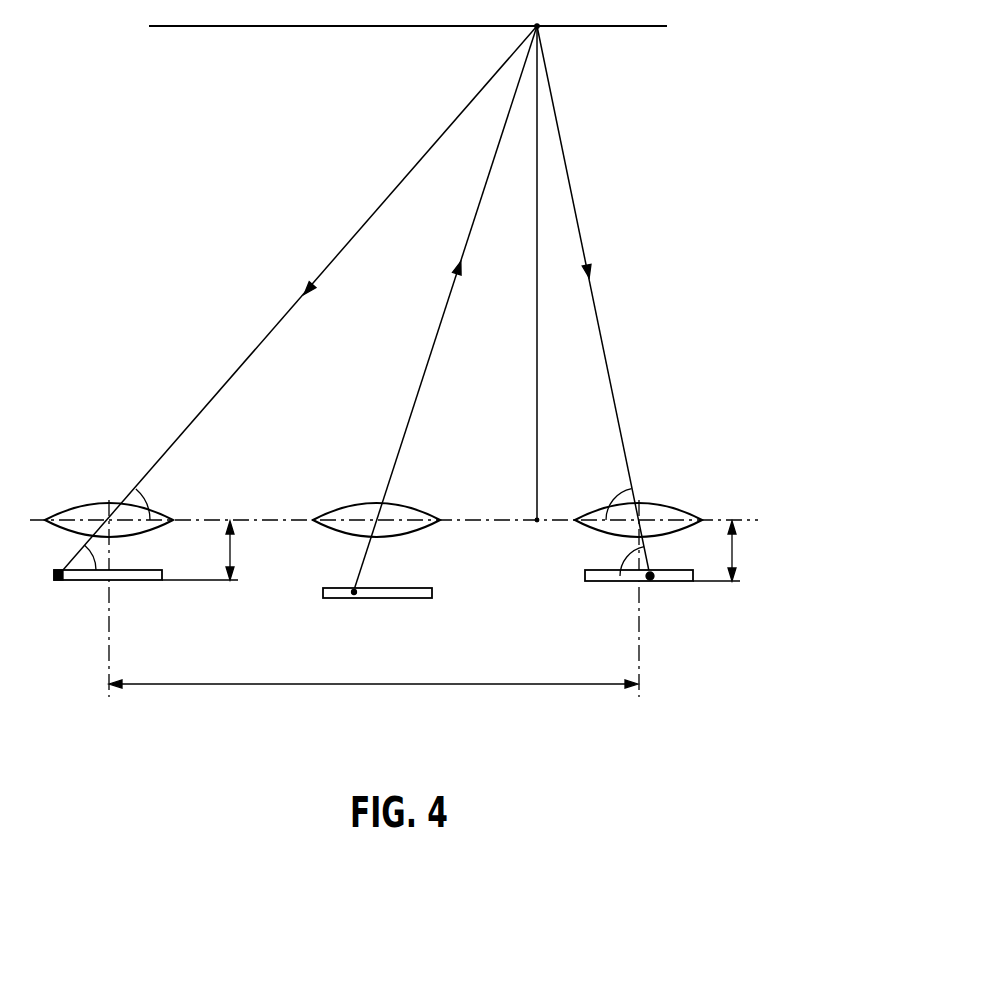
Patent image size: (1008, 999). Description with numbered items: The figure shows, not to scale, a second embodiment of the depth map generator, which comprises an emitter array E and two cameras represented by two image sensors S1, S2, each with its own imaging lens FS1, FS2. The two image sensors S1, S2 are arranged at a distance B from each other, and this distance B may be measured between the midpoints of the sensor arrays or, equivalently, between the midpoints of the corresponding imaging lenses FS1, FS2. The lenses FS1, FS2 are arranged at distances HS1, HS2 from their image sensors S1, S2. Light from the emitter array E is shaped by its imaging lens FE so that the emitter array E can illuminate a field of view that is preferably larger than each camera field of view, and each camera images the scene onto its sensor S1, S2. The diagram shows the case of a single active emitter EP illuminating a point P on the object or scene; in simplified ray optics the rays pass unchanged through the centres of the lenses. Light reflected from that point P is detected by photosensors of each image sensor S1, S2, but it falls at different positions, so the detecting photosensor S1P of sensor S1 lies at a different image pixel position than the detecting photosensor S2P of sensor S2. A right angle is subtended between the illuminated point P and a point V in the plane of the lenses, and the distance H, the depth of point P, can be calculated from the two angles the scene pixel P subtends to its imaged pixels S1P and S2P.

The point in the scene P is at (538, 14).
The distance to the illuminated point H is at (537, 345).
The point in the plane of the lenses V is at (537, 525).
The imaging lens of the first image sensor FS1 is at (75, 505).
The imaging lens of the emitter array FE is at (413, 506).
The imaging lens of the second image sensor FS2 is at (670, 506).
The second image sensor S2 is at (140, 583).
The detecting photosensor of sensor S2 S2P is at (63, 583).
The emitter array E is at (411, 600).
The active emitter pixel EP is at (352, 615).
The first image sensor S1 is at (677, 584).
The detecting photosensor of sensor S1 S1P is at (652, 583).
The distance between lens FS1 and image sensor S1 HS1 is at (233, 548).
The distance between lens FS2 and image sensor S2 HS2 is at (735, 548).
The distance between the image sensors B is at (373, 698).